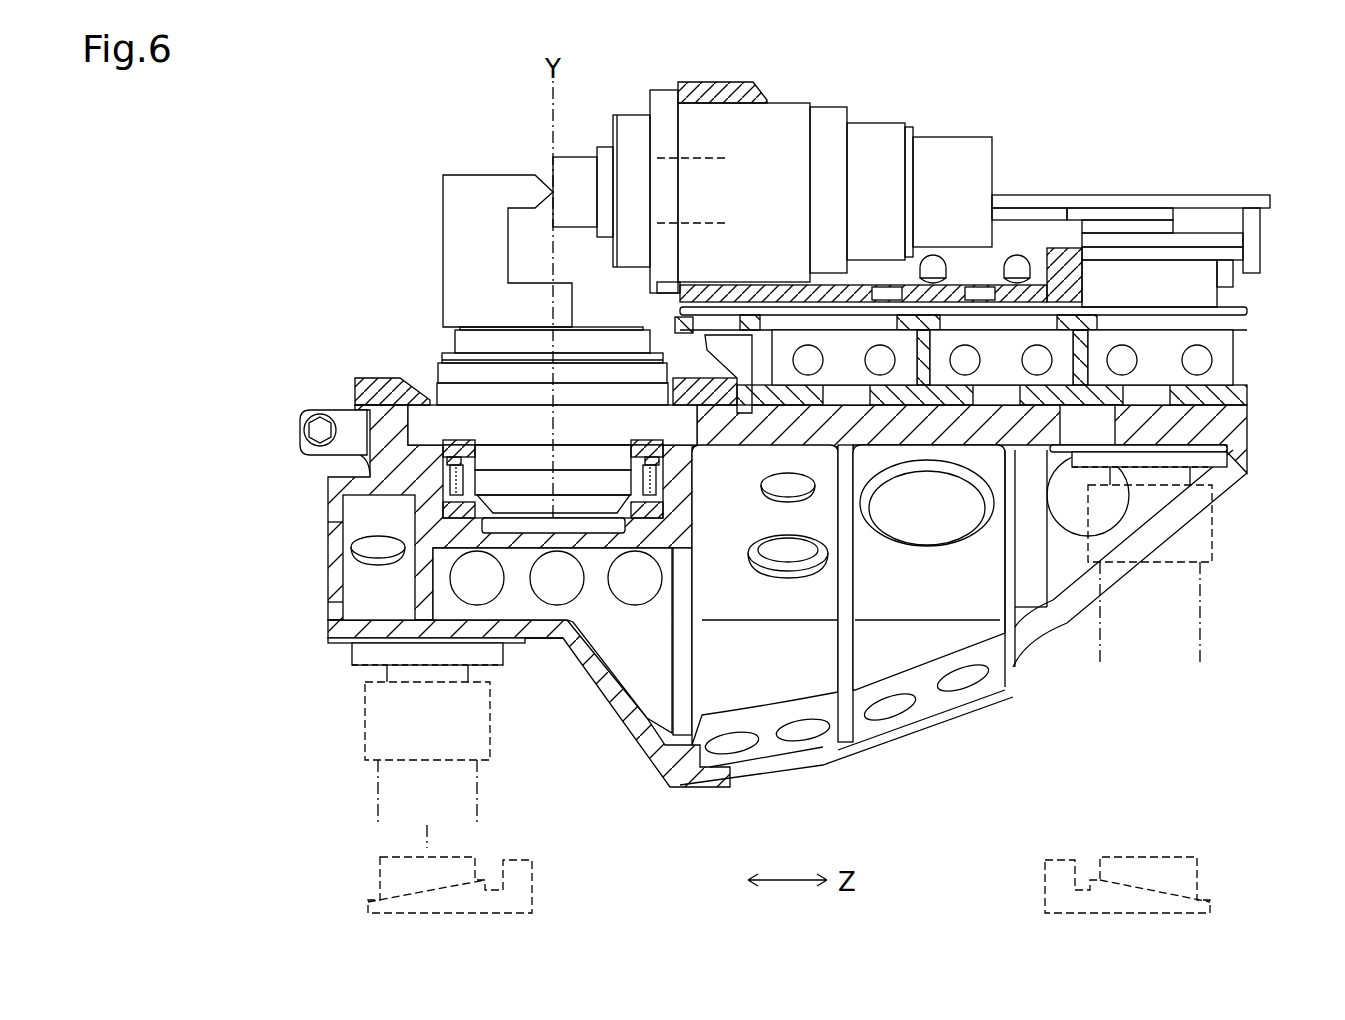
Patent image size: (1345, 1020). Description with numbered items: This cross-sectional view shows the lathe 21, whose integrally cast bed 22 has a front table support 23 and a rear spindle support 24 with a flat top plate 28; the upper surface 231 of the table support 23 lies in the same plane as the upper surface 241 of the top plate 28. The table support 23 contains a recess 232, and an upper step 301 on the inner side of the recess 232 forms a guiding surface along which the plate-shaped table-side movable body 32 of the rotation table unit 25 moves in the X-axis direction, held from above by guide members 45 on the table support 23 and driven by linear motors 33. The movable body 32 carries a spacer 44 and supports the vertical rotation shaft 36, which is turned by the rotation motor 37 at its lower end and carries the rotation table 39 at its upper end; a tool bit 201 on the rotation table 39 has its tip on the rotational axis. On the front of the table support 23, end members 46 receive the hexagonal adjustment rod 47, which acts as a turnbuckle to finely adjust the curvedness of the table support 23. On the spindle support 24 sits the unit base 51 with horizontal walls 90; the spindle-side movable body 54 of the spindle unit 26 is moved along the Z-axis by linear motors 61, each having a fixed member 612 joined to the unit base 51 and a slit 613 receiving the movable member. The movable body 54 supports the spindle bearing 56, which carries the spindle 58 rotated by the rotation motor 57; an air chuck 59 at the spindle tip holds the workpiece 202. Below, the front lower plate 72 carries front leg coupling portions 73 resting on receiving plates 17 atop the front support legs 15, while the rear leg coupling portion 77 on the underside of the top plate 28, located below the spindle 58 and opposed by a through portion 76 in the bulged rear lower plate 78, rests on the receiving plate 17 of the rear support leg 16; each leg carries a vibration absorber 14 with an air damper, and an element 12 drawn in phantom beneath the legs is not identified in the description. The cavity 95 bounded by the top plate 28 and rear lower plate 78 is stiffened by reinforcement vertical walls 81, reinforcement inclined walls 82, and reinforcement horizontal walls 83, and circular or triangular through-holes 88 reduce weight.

The base 12 is at (368, 885).
The vibration absorber 14 is at (1212, 540).
The front support leg 15 is at (378, 797).
The rear support leg 16 is at (1200, 612).
The receiving plate 17 is at (1230, 450).
The lathe 21 is at (1155, 95).
The bed 22 is at (1247, 425).
The table support 23 is at (338, 500).
The spindle support 24 is at (1195, 348).
The rotation table unit 25 is at (513, 327).
The spindle unit 26 is at (888, 120).
The top plate 28 is at (930, 460).
The table-side movable body 32 is at (395, 400).
The linear motor 33 is at (445, 490).
The rotation shaft 36 is at (598, 358).
The rotation motor 37 is at (597, 535).
The rotation table 39 is at (475, 330).
The spacer 44 is at (575, 412).
The guide member 45 is at (398, 380).
The end member 46 is at (305, 415).
The adjustment rod 47 is at (306, 430).
The unit base 51 is at (1247, 318).
The spindle-side movable body 54 is at (722, 80).
The spindle bearing 56 is at (800, 103).
The rotation motor 57 is at (965, 137).
The spindle 58 is at (712, 158).
The air chuck 59 is at (600, 237).
The linear motor 61 is at (1165, 200).
The front lower plate 72 is at (425, 640).
The front leg coupling portion 73 is at (365, 660).
The through portion 76 is at (1230, 480).
The rear leg coupling portion 77 is at (1122, 455).
The rear lower plate 78 is at (855, 760).
The reinforcement vertical wall 81 is at (775, 720).
The reinforcement inclined wall 82 is at (925, 620).
The reinforcement horizontal wall 83 is at (1000, 578).
The through-hole 88 is at (632, 605).
The horizontal wall 90 is at (890, 332).
The cavity 95 is at (887, 575).
The tool bit 201 is at (483, 175).
The workpiece 202 is at (574, 157).
The upper surface 231 is at (400, 410).
The recess 232 is at (520, 510).
The upper surface 241 is at (1247, 395).
The upper step 301 is at (690, 462).
The fixed member 612 is at (1097, 210).
The slit 613 is at (1125, 225).